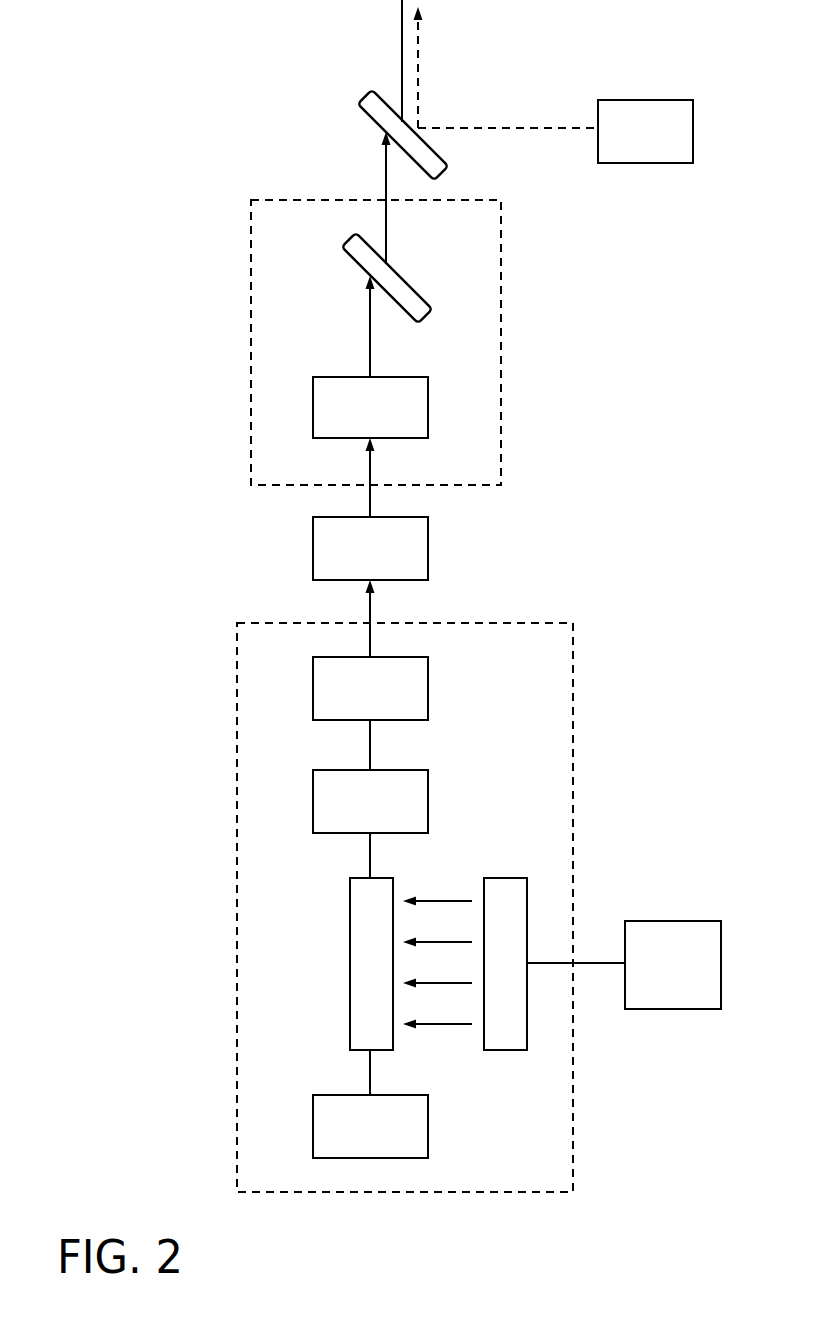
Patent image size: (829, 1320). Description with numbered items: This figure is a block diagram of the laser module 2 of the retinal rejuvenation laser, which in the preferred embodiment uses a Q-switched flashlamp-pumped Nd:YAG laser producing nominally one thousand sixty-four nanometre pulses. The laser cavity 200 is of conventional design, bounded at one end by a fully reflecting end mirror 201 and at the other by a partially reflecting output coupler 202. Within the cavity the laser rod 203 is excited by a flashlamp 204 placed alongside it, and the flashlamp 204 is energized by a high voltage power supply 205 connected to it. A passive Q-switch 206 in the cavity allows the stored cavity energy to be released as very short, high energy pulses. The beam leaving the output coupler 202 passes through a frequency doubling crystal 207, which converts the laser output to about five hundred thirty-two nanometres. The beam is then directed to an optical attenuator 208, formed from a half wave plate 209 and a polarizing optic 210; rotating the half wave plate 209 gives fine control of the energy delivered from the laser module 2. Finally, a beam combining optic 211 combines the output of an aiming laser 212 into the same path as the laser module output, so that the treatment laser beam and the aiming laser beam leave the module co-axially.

The laser module 2 is at (658, 579).
The laser cavity 200 is at (493, 1192).
The end mirror 201 is at (345, 1138).
The output coupler 202 is at (345, 700).
The laser rod 203 is at (350, 940).
The flashlamp 204 is at (510, 1030).
The high voltage power supply 205 is at (648, 976).
The passive Q-switch 206 is at (345, 813).
The frequency doubling crystal 207 is at (345, 560).
The optical attenuator 208 is at (250, 310).
The half wave plate 209 is at (345, 419).
The polarizing optic 210 is at (416, 297).
The beam combining optic 211 is at (366, 113).
The aiming laser 212 is at (620, 143).